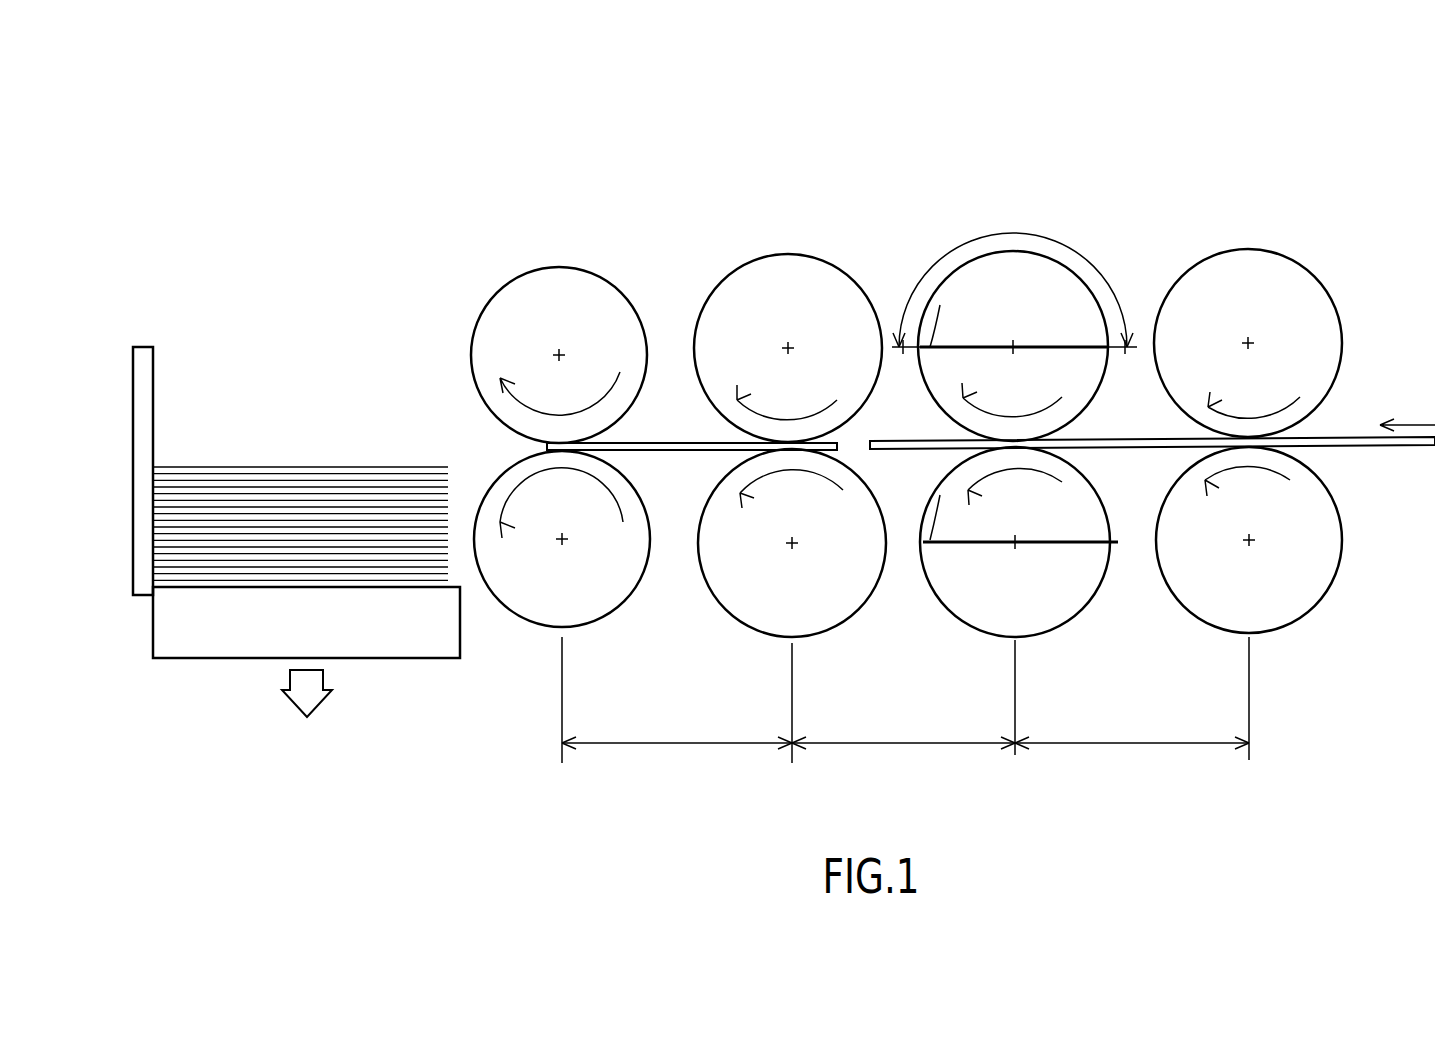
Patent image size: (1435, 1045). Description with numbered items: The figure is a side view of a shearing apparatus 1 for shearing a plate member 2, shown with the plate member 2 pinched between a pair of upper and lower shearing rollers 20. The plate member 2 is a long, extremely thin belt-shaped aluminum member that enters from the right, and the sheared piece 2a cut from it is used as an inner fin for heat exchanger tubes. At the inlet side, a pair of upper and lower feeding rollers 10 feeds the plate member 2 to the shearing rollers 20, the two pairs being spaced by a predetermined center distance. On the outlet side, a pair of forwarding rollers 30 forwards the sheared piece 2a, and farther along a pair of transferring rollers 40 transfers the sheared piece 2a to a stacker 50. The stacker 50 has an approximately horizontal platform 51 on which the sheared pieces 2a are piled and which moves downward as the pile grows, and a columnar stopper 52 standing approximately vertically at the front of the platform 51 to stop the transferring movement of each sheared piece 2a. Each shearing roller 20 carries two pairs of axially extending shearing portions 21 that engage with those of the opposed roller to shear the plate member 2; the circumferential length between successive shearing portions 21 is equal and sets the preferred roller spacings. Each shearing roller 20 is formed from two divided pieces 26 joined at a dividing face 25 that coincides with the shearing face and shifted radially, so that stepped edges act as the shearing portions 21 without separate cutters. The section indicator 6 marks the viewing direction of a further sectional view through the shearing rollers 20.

The shearing apparatus 1 is at (830, 150).
The plate member 2 is at (1391, 450).
The sheared piece 2a is at (323, 480).
The section view direction 6 is at (1133, 282).
The feeding roller 10 is at (1227, 268).
The shearing roller 20 is at (965, 260).
The shearing portion 21 is at (940, 305).
The dividing face 25 is at (962, 349).
The divided piece 26 is at (1048, 283).
The forwarding roller 30 is at (767, 254).
The transferring roller 40 is at (518, 273).
The stacker 50 is at (266, 292).
The platform 51 is at (178, 630).
The stopper 52 is at (143, 370).